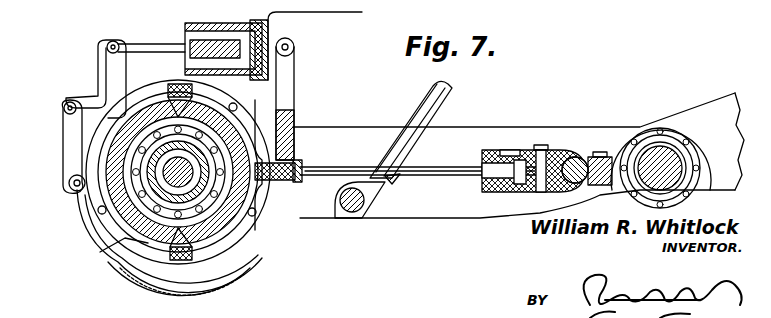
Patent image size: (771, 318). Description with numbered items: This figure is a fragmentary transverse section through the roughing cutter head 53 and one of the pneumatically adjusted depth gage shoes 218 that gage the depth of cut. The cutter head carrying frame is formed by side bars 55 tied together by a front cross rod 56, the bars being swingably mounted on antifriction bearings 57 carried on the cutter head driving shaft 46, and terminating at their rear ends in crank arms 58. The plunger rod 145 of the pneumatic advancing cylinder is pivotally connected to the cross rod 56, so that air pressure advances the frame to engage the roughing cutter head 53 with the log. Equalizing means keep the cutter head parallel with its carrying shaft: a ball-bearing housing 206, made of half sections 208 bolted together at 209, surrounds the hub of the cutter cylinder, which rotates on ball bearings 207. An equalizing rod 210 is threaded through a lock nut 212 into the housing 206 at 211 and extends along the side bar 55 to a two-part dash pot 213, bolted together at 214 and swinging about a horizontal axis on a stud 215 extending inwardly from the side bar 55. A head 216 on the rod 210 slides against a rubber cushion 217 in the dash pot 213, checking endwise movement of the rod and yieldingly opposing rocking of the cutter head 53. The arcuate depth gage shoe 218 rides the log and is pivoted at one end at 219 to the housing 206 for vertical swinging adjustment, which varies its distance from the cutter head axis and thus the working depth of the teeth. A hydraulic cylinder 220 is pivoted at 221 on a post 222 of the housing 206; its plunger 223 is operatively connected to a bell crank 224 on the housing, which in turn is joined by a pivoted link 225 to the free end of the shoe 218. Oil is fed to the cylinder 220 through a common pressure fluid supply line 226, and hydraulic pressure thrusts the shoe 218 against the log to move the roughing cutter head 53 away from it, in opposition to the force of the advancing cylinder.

The cutter head driving shaft 46 is at (668, 160).
The roughing cutter head 53 is at (97, 260).
The side bars 55 is at (549, 127).
The front cross rod 56 is at (352, 213).
The antifriction bearings 57 is at (658, 130).
The rear end crank arms 58 is at (714, 100).
The plunger rod 145 is at (423, 104).
The ball-bearing housings 206 is at (148, 243).
The ball bearings 207 is at (79, 166).
The half sections 208 is at (118, 217).
The bolts 209 is at (168, 94).
The equalizing rods 210 is at (445, 176).
The threaded end 211 is at (300, 159).
The lock nuts 212 is at (290, 186).
The dash pots 213 is at (491, 150).
The bolts 214 is at (600, 157).
The studs 215 is at (577, 184).
The heads 216 is at (519, 160).
The rubber cushions 217 is at (493, 192).
The depth gage shoes 218 is at (173, 280).
The pivot 219 is at (278, 218).
The hydraulic cylinders 220 is at (190, 25).
The pivot 221 is at (290, 47).
The posts 222 is at (296, 96).
The plungers 223 is at (148, 46).
The bell cranks 224 is at (112, 66).
The pivoted links 225 is at (65, 137).
The pressure fluid supply line 226 is at (300, 13).